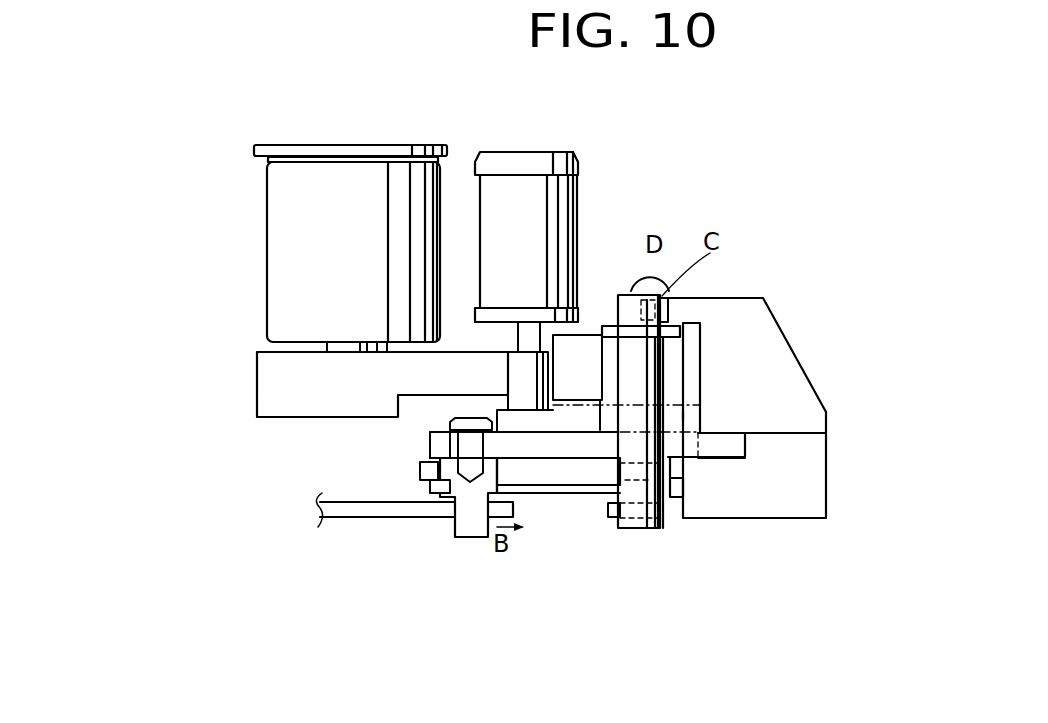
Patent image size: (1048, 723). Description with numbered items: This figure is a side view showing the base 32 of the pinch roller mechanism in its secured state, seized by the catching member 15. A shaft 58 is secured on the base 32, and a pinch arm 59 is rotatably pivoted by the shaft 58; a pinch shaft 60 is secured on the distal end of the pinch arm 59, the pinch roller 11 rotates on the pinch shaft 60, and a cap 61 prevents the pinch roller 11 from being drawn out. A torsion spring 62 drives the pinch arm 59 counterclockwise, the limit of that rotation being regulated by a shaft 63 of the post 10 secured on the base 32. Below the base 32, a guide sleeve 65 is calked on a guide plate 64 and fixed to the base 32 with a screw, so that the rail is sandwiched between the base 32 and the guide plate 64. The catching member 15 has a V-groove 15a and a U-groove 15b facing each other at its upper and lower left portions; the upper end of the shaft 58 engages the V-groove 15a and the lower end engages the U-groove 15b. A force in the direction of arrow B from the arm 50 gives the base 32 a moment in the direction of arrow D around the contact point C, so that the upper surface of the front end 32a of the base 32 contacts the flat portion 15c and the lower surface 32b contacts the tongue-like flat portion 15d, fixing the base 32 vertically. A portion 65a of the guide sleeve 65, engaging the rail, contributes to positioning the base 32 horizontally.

The post 10 is at (541, 157).
The pinch roller 11 is at (267, 198).
The catching member 15 is at (807, 418).
The V-groove 15a is at (668, 308).
The U-groove 15b is at (612, 517).
The flat portion 15c is at (792, 434).
The tongue-like flat portion 15d is at (553, 460).
The base 32 is at (430, 440).
The front end 32a is at (732, 448).
The lower surface 32b is at (417, 468).
The arm 50 is at (335, 510).
The shaft 58 is at (625, 313).
The pinch arm 59 is at (273, 383).
The pinch shaft 60 is at (338, 341).
The cap 61 is at (403, 146).
The torsion spring 62 is at (683, 415).
The shaft 63 is at (520, 338).
The guide plate 64 is at (535, 493).
The guide sleeve 65 is at (475, 535).
The portion of the guide sleeve 65a is at (468, 533).